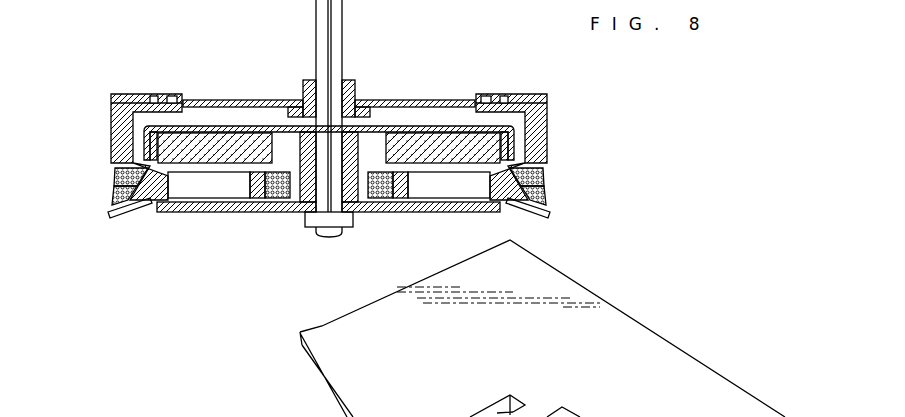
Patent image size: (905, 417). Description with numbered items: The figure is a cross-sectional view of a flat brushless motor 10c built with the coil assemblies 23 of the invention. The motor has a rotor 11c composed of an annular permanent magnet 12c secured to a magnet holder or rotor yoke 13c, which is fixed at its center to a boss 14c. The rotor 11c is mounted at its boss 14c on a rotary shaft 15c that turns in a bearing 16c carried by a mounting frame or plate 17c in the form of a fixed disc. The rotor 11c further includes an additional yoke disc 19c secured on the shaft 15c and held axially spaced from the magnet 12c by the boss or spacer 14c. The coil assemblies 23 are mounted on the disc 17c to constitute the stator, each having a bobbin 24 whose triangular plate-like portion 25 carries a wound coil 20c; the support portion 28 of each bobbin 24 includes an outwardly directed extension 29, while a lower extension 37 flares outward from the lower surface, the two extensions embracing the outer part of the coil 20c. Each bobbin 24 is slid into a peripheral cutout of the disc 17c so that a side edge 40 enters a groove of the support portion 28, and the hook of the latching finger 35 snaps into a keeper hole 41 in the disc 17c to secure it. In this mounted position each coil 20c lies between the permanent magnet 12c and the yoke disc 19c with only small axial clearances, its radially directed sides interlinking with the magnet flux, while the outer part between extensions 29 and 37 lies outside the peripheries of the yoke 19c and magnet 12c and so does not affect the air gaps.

The flat brushless motor 10c is at (435, 67).
The rotor 11c is at (414, 112).
The annular permanent magnet 12c is at (495, 145).
The magnet holder or rotor yoke 13c is at (447, 127).
The boss or spacer 14c is at (362, 193).
The rotary shaft 15c is at (342, 13).
The bearing 16c is at (355, 80).
The mounting frame or plate 17c is at (231, 100).
The yoke disc 19c is at (278, 213).
The coil 20c is at (115, 190).
The coil assembly 23 is at (145, 220).
The bobbin 24 is at (172, 193).
The triangular plate-like portion 25 is at (257, 192).
The support portion 28 is at (104, 135).
The outwardly directed extension 29 is at (118, 173).
The latching finger 35 is at (147, 92).
The lower extension 37 is at (112, 211).
The side edge of cutout 40 is at (445, 416).
The keeper hole 41 is at (585, 416).